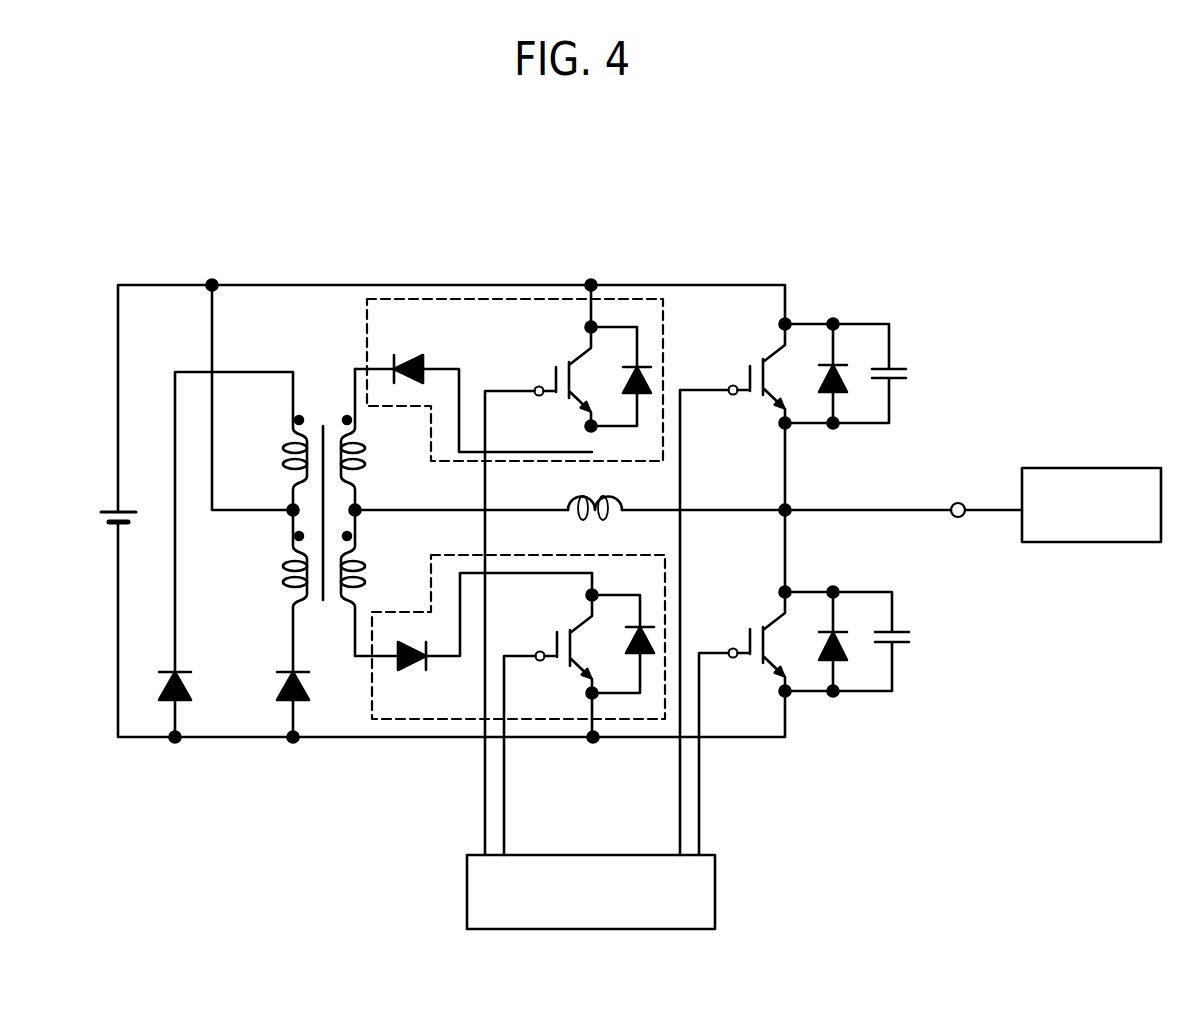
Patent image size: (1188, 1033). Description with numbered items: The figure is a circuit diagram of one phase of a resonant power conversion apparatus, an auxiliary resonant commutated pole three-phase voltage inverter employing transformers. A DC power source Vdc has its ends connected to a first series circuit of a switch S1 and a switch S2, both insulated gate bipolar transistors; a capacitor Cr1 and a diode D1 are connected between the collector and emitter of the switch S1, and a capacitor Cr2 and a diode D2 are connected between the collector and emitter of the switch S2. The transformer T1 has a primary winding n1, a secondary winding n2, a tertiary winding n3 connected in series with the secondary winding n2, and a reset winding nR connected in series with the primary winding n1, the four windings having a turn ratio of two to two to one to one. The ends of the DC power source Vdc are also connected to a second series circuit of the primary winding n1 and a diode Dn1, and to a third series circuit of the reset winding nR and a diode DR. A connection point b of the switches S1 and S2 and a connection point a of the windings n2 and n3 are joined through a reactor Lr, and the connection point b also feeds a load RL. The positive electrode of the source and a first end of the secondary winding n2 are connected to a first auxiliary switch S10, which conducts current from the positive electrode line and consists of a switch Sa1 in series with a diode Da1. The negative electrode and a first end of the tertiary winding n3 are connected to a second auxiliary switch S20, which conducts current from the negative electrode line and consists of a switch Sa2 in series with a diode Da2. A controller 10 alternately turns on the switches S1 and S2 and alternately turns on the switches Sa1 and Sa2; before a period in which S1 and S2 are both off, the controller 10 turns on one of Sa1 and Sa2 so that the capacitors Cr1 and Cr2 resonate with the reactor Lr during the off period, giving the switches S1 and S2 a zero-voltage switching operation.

The DC power source Vdc is at (85, 498).
The transformer T1 is at (321, 486).
The reset winding nR is at (241, 522).
The primary winding n1 is at (273, 589).
The secondary winding n2 is at (376, 439).
The tertiary winding n3 is at (376, 583).
The connection point a is at (360, 508).
The connection point b is at (790, 507).
The fourth diode DR is at (199, 704).
The third diode Dn1 is at (320, 704).
The first auxiliary switch S10 is at (462, 298).
The second auxiliary switch S20 is at (403, 721).
The fifth diode Da1 is at (473, 382).
The sixth diode Da2 is at (473, 646).
The third switch Sa1 is at (568, 570).
The fourth switch Sa2 is at (579, 714).
The first switch S1 is at (735, 587).
The second switch S2 is at (745, 721).
The first diode D1 is at (818, 353).
The second diode D2 is at (819, 666).
The first capacitor Cr1 is at (892, 372).
The second capacitor Cr2 is at (894, 646).
The reactor Lr is at (614, 494).
The load RL is at (1072, 467).
The controller 10 is at (716, 887).